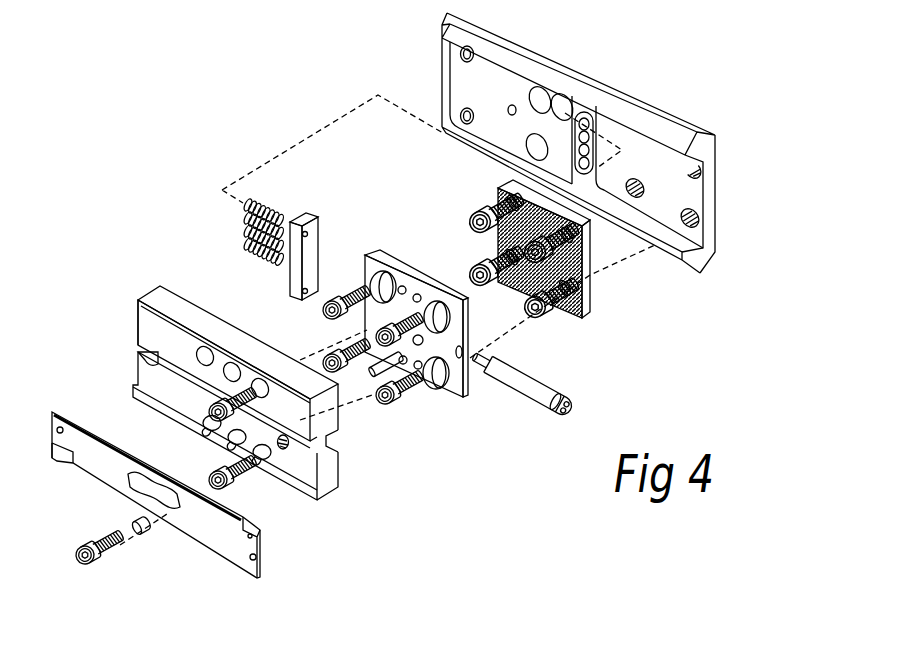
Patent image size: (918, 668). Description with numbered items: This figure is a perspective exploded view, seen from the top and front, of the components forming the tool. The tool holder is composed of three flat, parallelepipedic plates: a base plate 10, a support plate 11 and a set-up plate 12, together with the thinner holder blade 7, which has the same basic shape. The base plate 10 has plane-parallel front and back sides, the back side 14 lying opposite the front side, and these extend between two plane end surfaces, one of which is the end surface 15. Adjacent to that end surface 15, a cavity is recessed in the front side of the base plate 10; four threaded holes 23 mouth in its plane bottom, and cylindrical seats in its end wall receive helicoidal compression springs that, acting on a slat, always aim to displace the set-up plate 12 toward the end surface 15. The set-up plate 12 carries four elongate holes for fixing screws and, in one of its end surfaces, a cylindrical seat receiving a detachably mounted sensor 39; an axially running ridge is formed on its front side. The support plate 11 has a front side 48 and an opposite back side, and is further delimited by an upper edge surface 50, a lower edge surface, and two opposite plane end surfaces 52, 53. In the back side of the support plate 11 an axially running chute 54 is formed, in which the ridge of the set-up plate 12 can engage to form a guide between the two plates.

The holder blade 7 is at (214, 566).
The base plate 10 is at (700, 112).
The support plate 11 is at (280, 460).
The set-up plate 12 is at (461, 404).
The back side 14 is at (662, 250).
The end surface 15 is at (710, 208).
The threaded holes 23 is at (490, 210).
The sensor 39 is at (540, 376).
The front side 48 is at (182, 349).
The upper edge surface 50 is at (200, 363).
The end surface 52 is at (332, 482).
The end surface 53 is at (135, 313).
The chute 54 is at (334, 436).